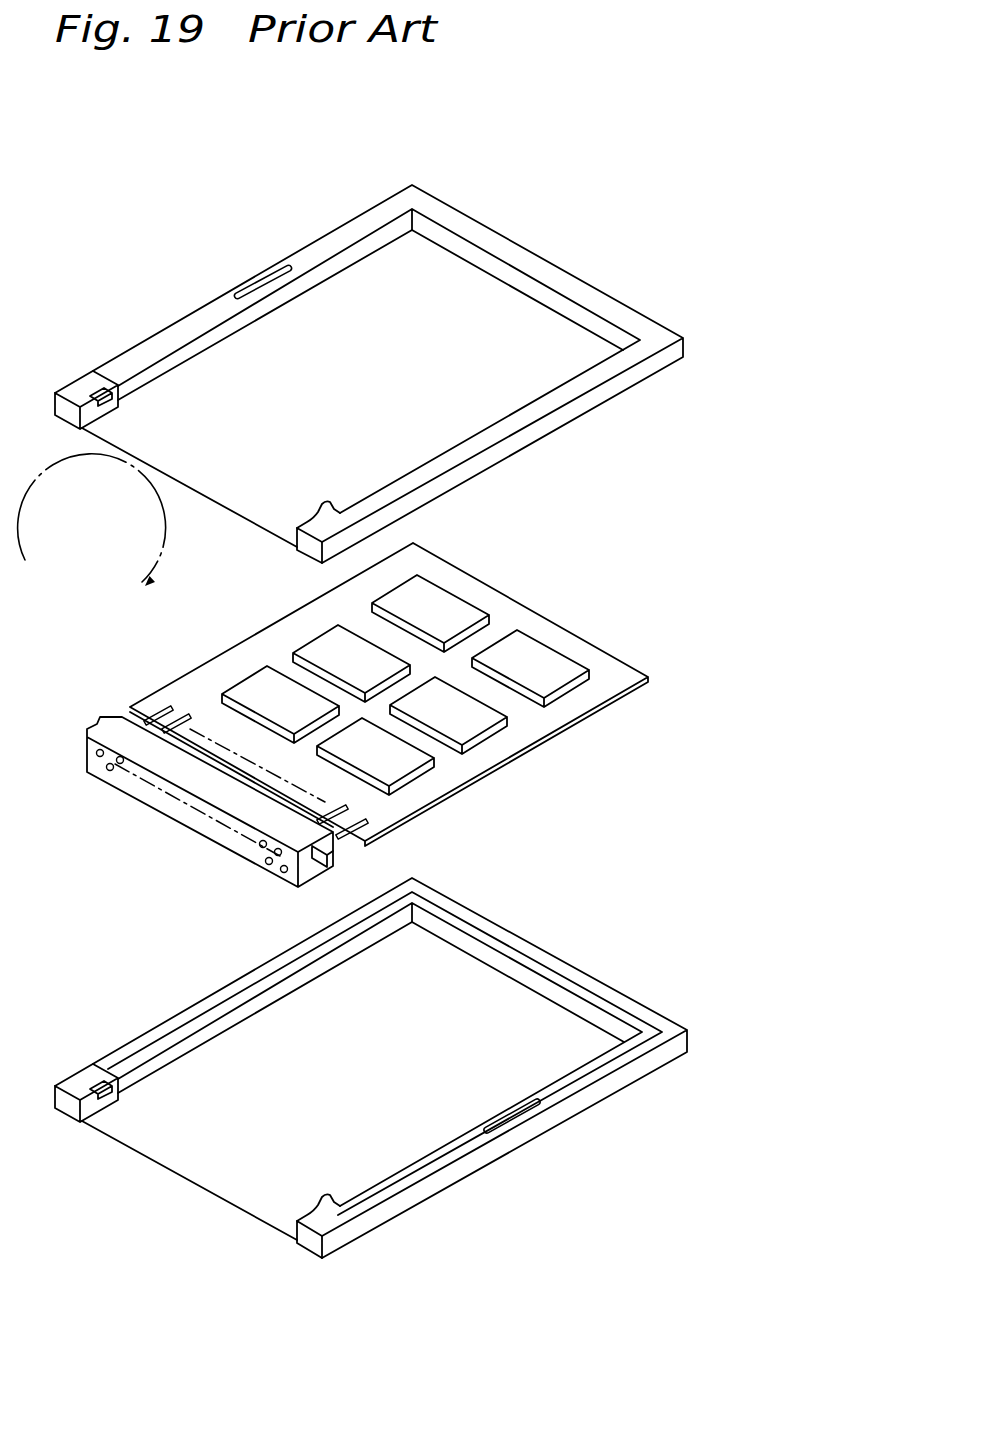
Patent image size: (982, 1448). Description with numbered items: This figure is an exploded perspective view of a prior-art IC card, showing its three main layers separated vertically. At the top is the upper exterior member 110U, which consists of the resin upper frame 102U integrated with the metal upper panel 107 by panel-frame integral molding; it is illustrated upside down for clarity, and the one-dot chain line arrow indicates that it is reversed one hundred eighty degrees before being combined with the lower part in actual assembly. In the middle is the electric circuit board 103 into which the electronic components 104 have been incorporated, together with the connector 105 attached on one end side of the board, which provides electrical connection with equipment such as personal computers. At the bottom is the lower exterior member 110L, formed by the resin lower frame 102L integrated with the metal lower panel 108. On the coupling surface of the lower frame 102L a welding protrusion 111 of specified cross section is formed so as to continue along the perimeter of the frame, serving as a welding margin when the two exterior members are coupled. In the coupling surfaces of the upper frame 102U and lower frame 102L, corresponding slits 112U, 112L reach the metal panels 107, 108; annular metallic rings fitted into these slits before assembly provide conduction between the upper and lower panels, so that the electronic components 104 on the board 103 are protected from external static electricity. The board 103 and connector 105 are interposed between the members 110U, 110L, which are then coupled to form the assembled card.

The upper exterior member 110U is at (697, 263).
The upper frame 102U is at (578, 288).
The upper panel 107 is at (463, 303).
The slit 112U is at (262, 280).
The electric circuit board 103 is at (612, 683).
The electronic components 104 is at (535, 650).
The connector 105 is at (167, 807).
The lower exterior member 110L is at (556, 1216).
The lower frame 102L is at (398, 1210).
The lower panel 108 is at (397, 1136).
The welding protrusion 111 is at (552, 955).
The slit 112L is at (533, 1112).